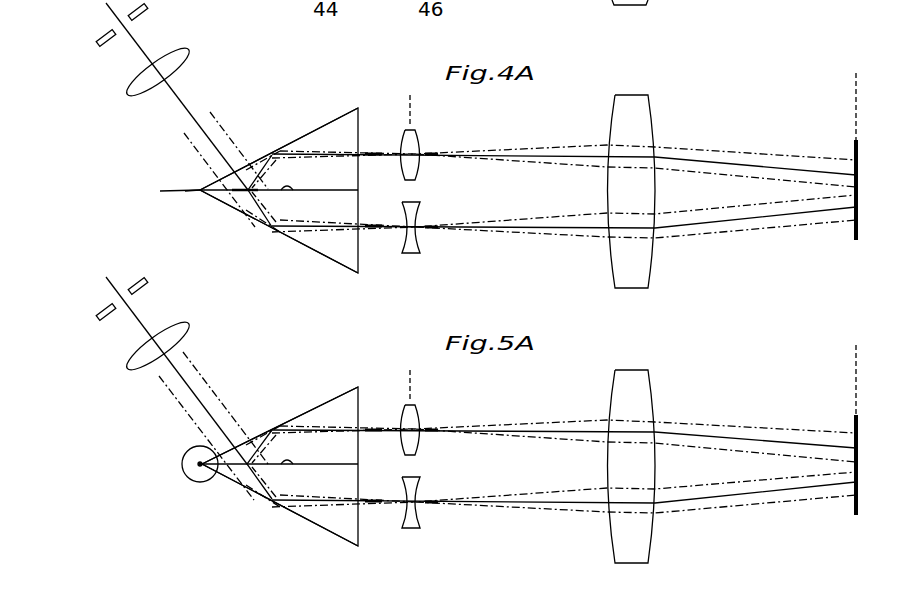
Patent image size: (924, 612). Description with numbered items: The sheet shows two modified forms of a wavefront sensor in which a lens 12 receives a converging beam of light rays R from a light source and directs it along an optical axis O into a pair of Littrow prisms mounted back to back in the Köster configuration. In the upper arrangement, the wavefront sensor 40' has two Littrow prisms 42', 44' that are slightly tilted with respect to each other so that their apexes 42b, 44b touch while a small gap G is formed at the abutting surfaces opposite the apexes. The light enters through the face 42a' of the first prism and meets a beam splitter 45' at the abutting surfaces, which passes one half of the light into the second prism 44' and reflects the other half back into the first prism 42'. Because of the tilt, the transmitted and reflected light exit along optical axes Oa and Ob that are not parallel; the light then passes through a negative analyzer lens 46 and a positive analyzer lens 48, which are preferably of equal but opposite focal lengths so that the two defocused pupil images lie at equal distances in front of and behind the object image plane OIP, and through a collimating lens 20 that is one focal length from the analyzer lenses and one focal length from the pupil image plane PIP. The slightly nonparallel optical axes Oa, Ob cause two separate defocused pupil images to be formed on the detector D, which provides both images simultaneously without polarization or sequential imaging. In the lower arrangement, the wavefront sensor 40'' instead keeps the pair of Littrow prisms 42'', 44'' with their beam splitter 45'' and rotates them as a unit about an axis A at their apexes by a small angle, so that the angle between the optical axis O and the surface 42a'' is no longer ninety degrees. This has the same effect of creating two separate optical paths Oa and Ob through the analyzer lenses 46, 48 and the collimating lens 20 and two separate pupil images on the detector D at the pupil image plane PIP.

In FIG. 4A, the aperture plates P is at (118, 27).
In FIG. 5A, the aperture plates P is at (118, 301).
In FIG. 4A, the lens 12 is at (128, 91).
In FIG. 5A, the lens 12 is at (128, 358).
In FIG. 4A, the optical axis O is at (177, 105).
In FIG. 5A, the optical axis O is at (172, 378).
In FIG. 4A, the light rays R is at (222, 122).
In FIG. 5A, the light rays R is at (205, 372).
In FIG. 4A, the Littrow prism 42' is at (279, 170).
In FIG. 4A, the face of Littrow prism 42a' is at (279, 137).
In FIG. 4A, the apex of Littrow prism 42b is at (175, 191).
In FIG. 4A, the apex of Littrow prism 44b is at (175, 212).
In FIG. 4A, the Littrow prism 44' is at (279, 247).
In FIG. 4A, the beam splitter 45' is at (243, 211).
In FIG. 4A, the gap G is at (358, 190).
In FIG. 4A, the object image plane OIP is at (408, 124).
In FIG. 5A, the object image plane OIP is at (408, 399).
In FIG. 4A, the positive analyzer lens 48 is at (416, 135).
In FIG. 5A, the positive analyzer lens 48 is at (416, 410).
In FIG. 4A, the negative analyzer lens 46 is at (413, 255).
In FIG. 5A, the negative analyzer lens 46 is at (420, 527).
In FIG. 4A, the optical axis Oa is at (568, 153).
In FIG. 5A, the optical axis Oa is at (575, 430).
In FIG. 4A, the optical axis Ob is at (565, 230).
In FIG. 5A, the optical axis Ob is at (565, 503).
In FIG. 4A, the collimating lens 20 is at (624, 95).
In FIG. 5A, the collimating lens 20 is at (640, 370).
In FIG. 4A, the wavefront sensor 40' is at (578, 74).
In FIG. 4A, the pupil image plane PIP is at (858, 113).
In FIG. 5A, the pupil image plane PIP is at (858, 385).
In FIG. 4A, the detector D is at (860, 153).
In FIG. 5A, the detector D is at (860, 427).
In FIG. 5A, the axis A is at (183, 476).
In FIG. 5A, the Littrow prism 42'' is at (289, 436).
In FIG. 5A, the face of Littrow prism 42a'' is at (280, 411).
In FIG. 5A, the beam splitter 45'' is at (241, 487).
In FIG. 5A, the Littrow prism 44'' is at (280, 508).
In FIG. 5A, the wavefront sensor 40'' is at (583, 342).